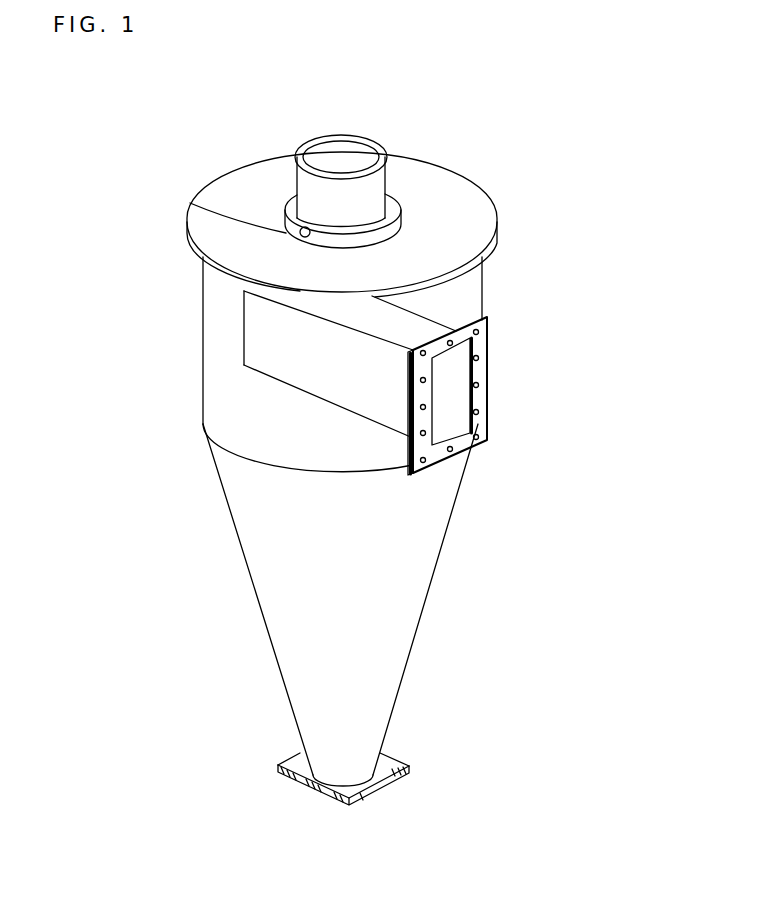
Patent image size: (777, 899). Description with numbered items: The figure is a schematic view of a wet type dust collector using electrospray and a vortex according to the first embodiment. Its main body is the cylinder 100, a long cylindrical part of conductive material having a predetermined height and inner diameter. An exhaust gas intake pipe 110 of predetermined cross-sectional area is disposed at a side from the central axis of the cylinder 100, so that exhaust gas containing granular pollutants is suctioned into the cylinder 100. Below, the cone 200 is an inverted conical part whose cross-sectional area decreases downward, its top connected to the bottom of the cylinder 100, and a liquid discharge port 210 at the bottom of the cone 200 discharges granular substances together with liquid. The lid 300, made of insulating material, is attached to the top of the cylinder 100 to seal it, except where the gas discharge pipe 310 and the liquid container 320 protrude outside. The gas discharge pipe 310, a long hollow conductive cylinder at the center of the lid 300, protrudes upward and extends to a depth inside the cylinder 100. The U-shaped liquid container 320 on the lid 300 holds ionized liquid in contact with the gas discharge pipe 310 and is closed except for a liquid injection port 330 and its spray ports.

The cylinder 100 is at (217, 343).
The exhaust gas intake pipe 110 is at (417, 327).
The cone 200 is at (287, 580).
The liquid discharge port 210 is at (387, 785).
The lid 300 is at (463, 207).
The gas discharge pipe 310 is at (305, 187).
The liquid container 320 is at (437, 167).
The liquid injection port 330 is at (192, 203).